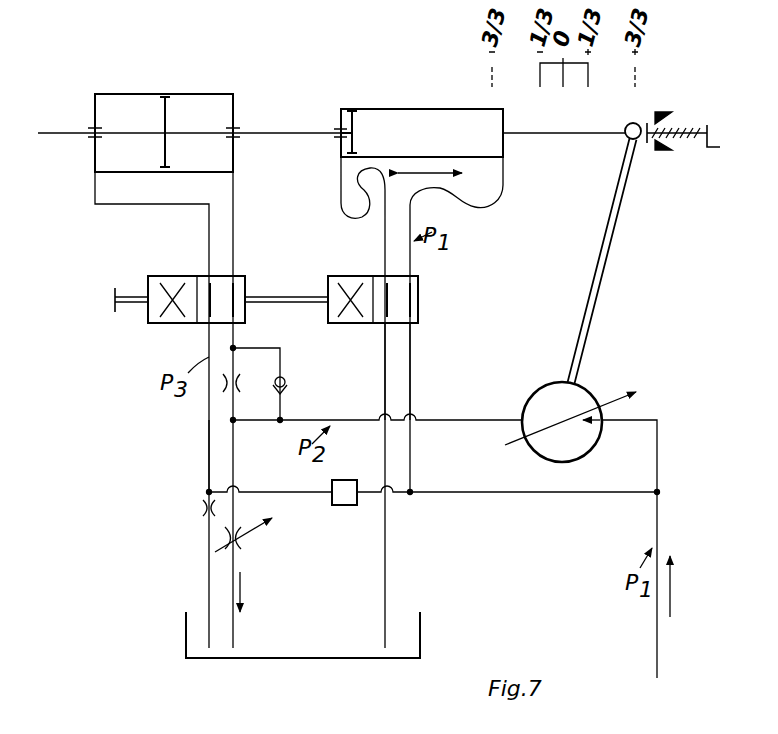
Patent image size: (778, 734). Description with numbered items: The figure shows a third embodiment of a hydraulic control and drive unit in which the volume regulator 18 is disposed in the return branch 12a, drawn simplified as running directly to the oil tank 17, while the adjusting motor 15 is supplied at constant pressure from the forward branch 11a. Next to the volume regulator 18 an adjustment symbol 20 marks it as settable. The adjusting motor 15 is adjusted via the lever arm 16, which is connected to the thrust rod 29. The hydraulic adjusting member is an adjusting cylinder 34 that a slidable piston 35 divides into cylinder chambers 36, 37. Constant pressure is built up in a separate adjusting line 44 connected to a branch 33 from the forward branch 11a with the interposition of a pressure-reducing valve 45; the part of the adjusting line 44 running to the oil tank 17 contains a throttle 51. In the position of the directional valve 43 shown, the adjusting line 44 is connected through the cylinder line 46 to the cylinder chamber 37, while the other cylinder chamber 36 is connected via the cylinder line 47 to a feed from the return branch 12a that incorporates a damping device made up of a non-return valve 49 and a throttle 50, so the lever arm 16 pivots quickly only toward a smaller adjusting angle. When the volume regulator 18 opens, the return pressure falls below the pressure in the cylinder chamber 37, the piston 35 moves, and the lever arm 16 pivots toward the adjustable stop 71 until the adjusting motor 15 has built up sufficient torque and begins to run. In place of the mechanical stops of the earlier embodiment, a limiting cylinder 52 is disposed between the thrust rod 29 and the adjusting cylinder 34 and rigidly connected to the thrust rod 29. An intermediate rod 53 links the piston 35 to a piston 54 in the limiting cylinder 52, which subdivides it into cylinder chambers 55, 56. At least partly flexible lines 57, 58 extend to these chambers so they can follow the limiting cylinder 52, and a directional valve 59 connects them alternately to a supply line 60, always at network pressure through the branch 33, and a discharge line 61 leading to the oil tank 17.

The cylinder chamber 37 is at (118, 107).
The adjusting cylinder 34 is at (140, 93).
The piston 35 is at (165, 110).
The cylinder chamber 36 is at (198, 112).
The intermediate rod 53 is at (292, 130).
The cylinder chamber 55 is at (345, 118).
The piston 54 is at (355, 120).
The cylinder chamber 56 is at (415, 118).
The limiting cylinder 52 is at (458, 106).
The thrust rod 29 is at (551, 134).
The adjustable stop 71 is at (674, 111).
The cylinder line 46 is at (127, 206).
The cylinder line 47 is at (232, 197).
The line 57 is at (348, 212).
The line 58 is at (490, 203).
The lever arm 16 is at (606, 262).
The adjusting motor 15 is at (580, 400).
The directional valve 43 is at (163, 323).
The directional valve 59 is at (420, 296).
The non-return valve 49 is at (285, 380).
The throttle 50 is at (223, 387).
The discharge line 61 is at (385, 363).
The supply line 60 is at (410, 368).
The adjusting line 44 is at (209, 440).
The return branch 12a is at (468, 421).
The pressure-reducing valve 45 is at (344, 505).
The branch 33 is at (486, 493).
The throttle 51 is at (203, 510).
The adjustable throttle 20 is at (276, 527).
The volume regulator 18 is at (246, 545).
The oil tank 17 is at (186, 625).
The forward branch 11a is at (659, 500).